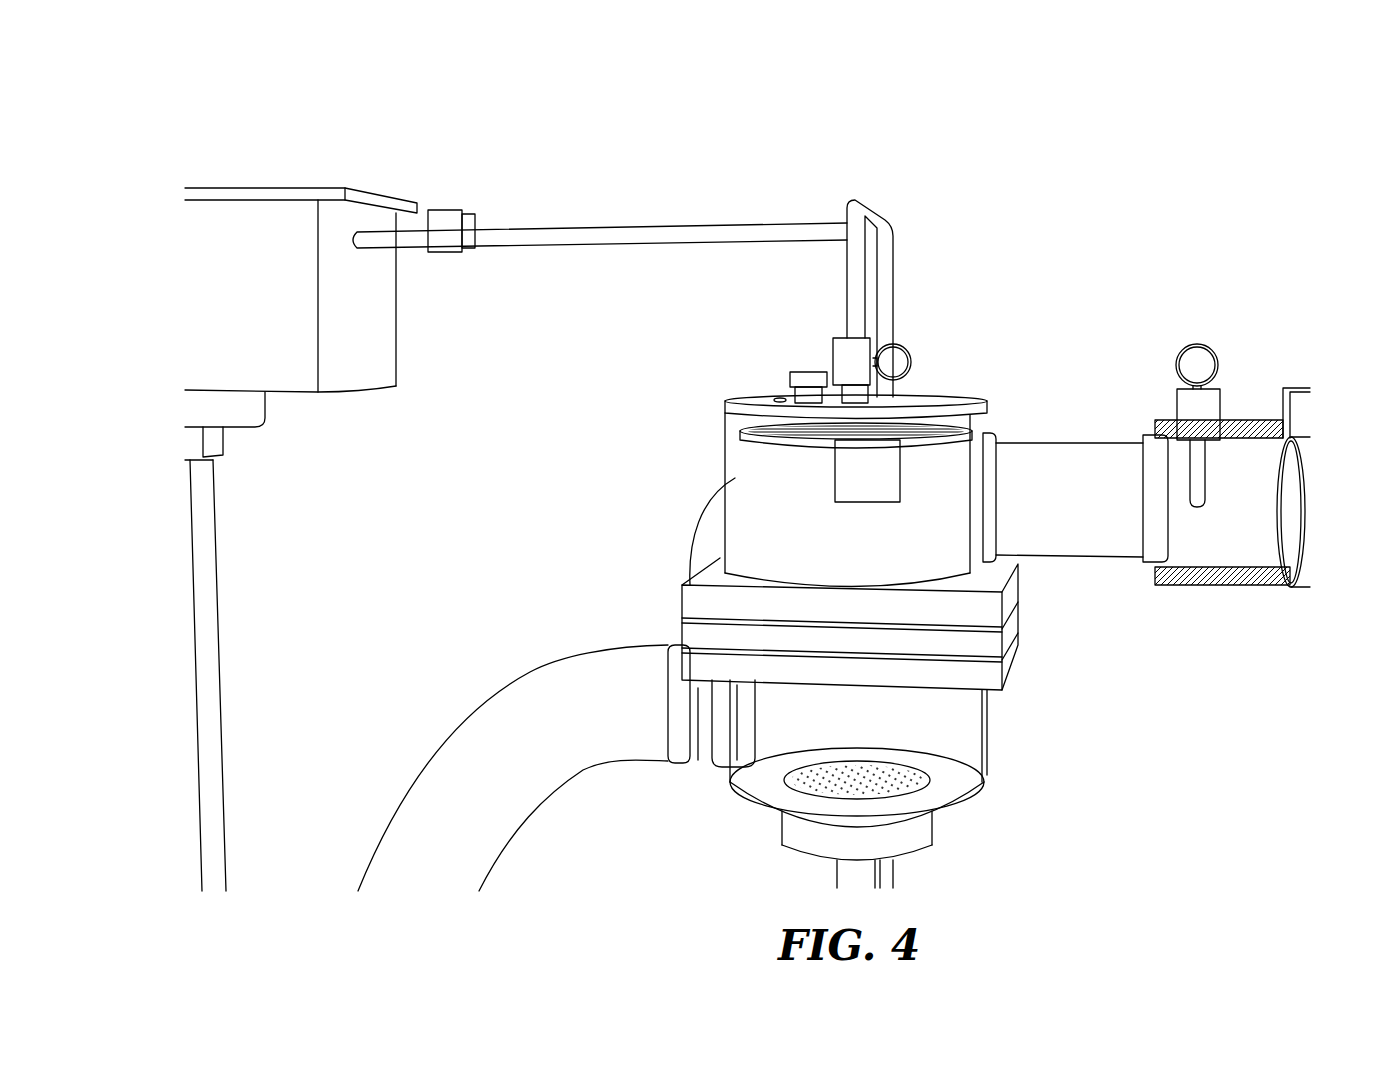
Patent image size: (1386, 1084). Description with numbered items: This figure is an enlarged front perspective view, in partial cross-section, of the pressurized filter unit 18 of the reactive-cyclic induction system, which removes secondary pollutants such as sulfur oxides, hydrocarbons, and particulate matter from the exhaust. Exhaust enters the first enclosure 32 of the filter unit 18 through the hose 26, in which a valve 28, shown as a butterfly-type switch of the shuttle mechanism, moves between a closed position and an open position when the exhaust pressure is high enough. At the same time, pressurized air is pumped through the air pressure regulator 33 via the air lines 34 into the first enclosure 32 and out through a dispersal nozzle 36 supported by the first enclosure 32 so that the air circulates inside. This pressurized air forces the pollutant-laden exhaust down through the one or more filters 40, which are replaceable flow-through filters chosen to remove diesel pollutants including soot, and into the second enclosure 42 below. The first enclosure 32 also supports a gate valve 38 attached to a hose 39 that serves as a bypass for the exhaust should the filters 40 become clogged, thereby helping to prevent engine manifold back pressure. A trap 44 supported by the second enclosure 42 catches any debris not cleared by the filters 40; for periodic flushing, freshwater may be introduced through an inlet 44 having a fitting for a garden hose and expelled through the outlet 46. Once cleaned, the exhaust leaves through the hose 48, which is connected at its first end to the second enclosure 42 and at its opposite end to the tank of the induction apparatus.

The pressurized filter unit 18 is at (1018, 232).
The hose 26 is at (1097, 438).
The valve 28 is at (1273, 480).
The first enclosure 32 is at (690, 486).
The air pressure regulator 33 is at (833, 340).
The air lines 34 is at (888, 215).
The dispersal nozzle 36 is at (725, 432).
The gate valve 38 is at (900, 477).
The hose 39 is at (693, 539).
The filters 40 is at (1037, 645).
The second enclosure 42 is at (995, 752).
The trap 44 is at (793, 373).
The outlet 46 is at (787, 838).
The hose 48 is at (495, 699).